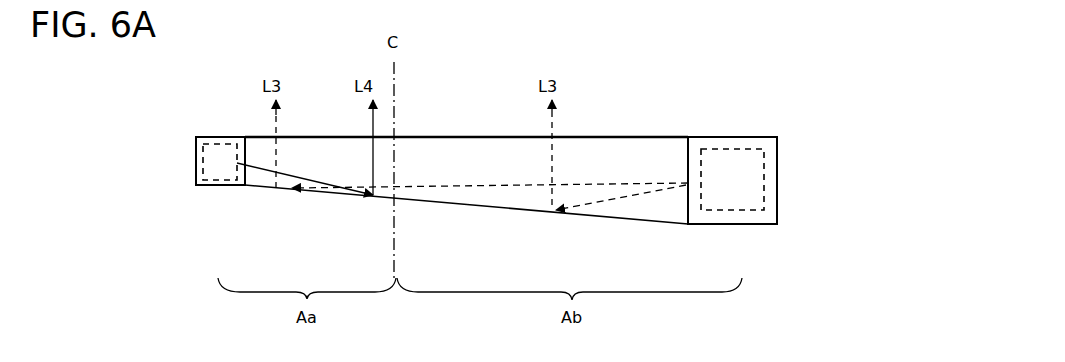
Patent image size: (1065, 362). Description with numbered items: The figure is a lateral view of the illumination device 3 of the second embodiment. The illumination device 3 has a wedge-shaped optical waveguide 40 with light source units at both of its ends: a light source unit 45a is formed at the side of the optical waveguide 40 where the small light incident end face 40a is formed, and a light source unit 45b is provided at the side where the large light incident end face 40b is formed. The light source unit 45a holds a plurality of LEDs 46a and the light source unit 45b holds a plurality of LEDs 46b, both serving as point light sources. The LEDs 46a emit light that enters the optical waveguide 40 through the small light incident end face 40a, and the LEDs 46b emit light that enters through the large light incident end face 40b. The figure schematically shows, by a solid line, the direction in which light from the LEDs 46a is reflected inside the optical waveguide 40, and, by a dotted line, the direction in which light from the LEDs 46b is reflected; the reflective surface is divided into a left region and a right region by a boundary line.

The illumination device 3 is at (822, 27).
The optical waveguide 40 is at (605, 136).
The small light incident end face 40a is at (260, 186).
The large light incident end face 40b is at (679, 212).
The light source unit 45a is at (220, 137).
The light source unit 45b is at (733, 137).
The LEDs 46a is at (222, 186).
The LEDs 46b is at (764, 188).